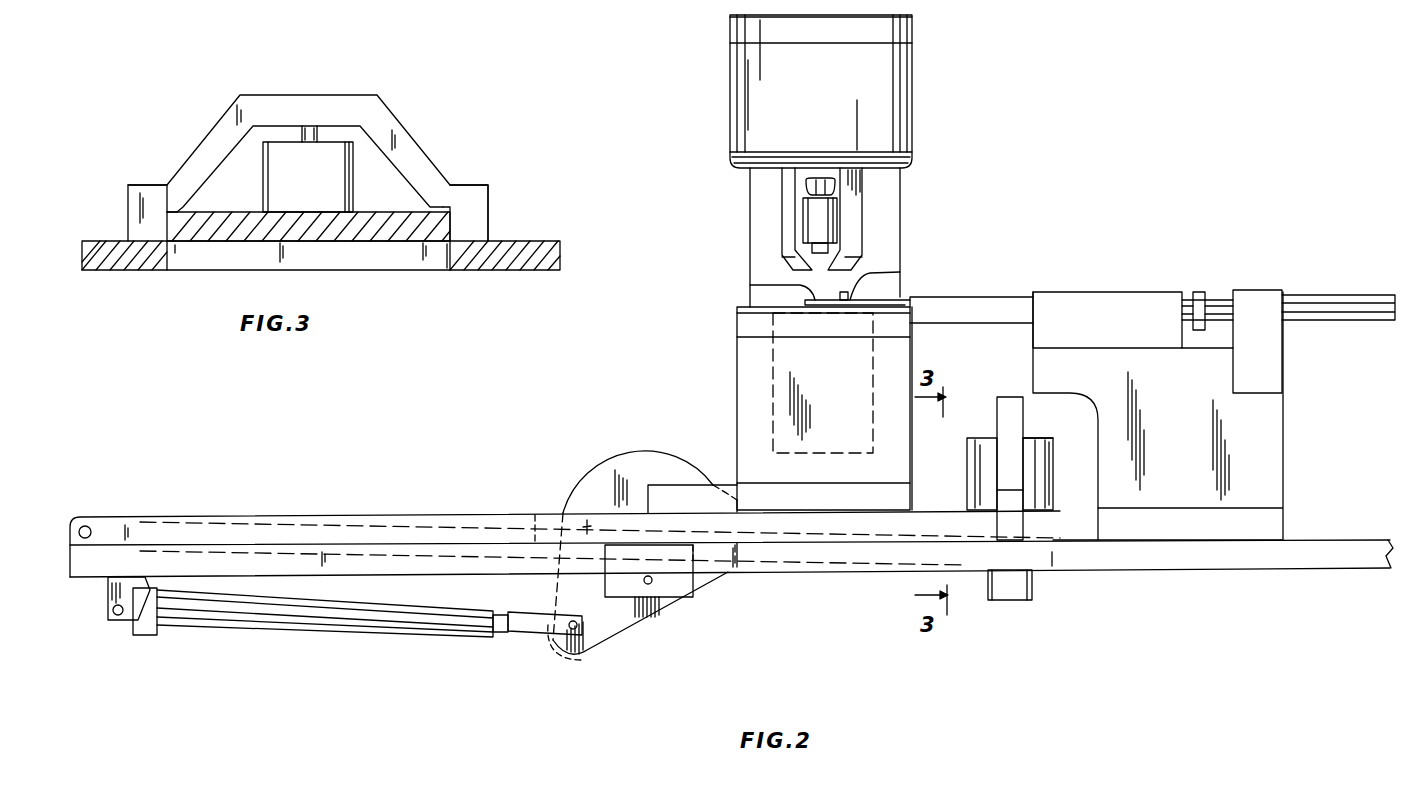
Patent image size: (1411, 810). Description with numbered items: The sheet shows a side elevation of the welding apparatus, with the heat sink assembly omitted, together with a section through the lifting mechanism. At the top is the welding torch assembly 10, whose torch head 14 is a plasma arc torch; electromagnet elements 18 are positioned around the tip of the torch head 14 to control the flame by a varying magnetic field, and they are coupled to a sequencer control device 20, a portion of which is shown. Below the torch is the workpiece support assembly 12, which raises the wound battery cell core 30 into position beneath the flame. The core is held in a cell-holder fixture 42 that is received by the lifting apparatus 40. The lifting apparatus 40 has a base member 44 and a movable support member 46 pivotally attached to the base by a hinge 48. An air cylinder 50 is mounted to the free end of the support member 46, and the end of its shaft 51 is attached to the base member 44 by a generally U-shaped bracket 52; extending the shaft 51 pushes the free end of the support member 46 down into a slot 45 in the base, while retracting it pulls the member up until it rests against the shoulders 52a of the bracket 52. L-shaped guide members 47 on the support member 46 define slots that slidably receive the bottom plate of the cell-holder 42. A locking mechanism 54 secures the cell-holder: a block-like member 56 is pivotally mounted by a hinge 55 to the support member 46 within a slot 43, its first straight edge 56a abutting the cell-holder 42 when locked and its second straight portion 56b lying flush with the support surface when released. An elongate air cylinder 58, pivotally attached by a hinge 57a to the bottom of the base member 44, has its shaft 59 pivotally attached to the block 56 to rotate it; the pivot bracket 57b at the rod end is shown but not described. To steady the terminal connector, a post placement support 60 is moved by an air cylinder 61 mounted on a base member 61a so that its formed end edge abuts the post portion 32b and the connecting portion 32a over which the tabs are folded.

In FIG. 2, the welding torch assembly 10 is at (967, 122).
In FIG. 2, the workpiece support assembly 12 is at (666, 404).
In FIG. 2, the torch head 14 is at (830, 218).
In FIG. 2, the electromagnet elements 18 is at (788, 240).
In FIG. 2, the sequencer control device 20 is at (897, 93).
In FIG. 2, the wound battery cell core 30 is at (773, 413).
In FIG. 2, the connecting portion 32a is at (807, 293).
In FIG. 2, the post portion 32b is at (870, 273).
In FIG. 2, the lifting apparatus 40 is at (470, 446).
In FIG. 2, the cell-holder fixture 42 is at (737, 375).
In FIG. 2, the slot 43 is at (540, 527).
In FIG. 3, the base member 44 is at (510, 247).
In FIG. 2, the base member 44 is at (280, 557).
In FIG. 3, the slot 45 is at (441, 250).
In FIG. 2, the slot 45 is at (1050, 552).
In FIG. 3, the movable support member 46 is at (427, 203).
In FIG. 2, the movable support member 46 is at (495, 520).
In FIG. 2, the guide members 47 is at (737, 490).
In FIG. 2, the hinge 48 is at (90, 527).
In FIG. 3, the air cylinder 50 is at (348, 190).
In FIG. 2, the air cylinder 50 is at (1053, 480).
In FIG. 3, the shaft 51 is at (317, 126).
In FIG. 3, the U-shaped bracket 52 is at (385, 125).
In FIG. 2, the U-shaped bracket 52 is at (1013, 425).
In FIG. 3, the shoulders 52a is at (190, 207).
In FIG. 2, the locking mechanism 54 is at (352, 642).
In FIG. 2, the hinge 55 is at (652, 582).
In FIG. 2, the block-like member 56 is at (593, 477).
In FIG. 2, the first straight edge 56a is at (743, 573).
In FIG. 2, the second straight portion 56b is at (632, 628).
In FIG. 2, the hinge 57a is at (115, 613).
In FIG. 2, the rod pivot bracket 57b is at (567, 652).
In FIG. 2, the elongate air cylinder 58 is at (432, 623).
In FIG. 2, the shaft 59 is at (497, 632).
In FIG. 2, the post placement support 60 is at (880, 297).
In FIG. 2, the air cylinder 61 is at (1215, 292).
In FIG. 2, the base member 61a is at (1297, 438).